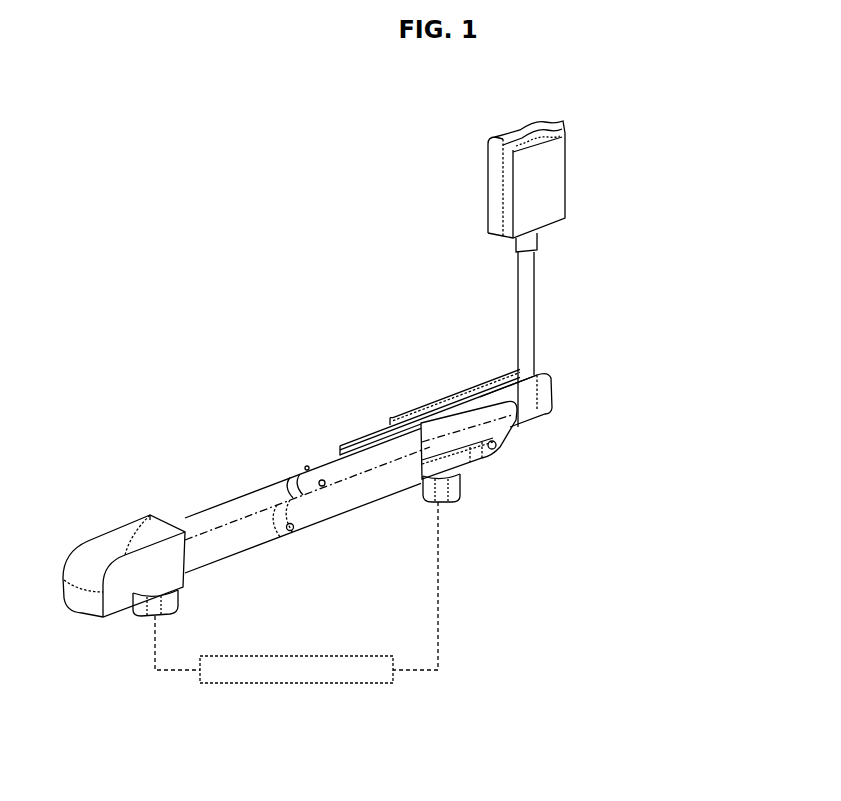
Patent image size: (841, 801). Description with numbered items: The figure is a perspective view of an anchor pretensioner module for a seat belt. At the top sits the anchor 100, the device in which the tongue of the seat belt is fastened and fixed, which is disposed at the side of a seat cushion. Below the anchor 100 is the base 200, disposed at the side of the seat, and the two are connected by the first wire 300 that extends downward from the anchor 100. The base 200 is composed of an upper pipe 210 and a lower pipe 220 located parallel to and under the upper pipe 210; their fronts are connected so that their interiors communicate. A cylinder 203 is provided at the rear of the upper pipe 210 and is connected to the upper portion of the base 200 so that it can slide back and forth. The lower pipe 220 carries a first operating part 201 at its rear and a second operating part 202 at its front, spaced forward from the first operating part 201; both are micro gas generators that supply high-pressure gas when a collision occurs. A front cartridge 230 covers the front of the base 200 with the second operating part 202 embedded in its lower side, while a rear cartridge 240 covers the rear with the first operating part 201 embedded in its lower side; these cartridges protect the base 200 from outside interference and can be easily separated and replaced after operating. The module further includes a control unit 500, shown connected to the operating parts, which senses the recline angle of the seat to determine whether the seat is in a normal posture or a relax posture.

The anchor 100 is at (503, 190).
The base 200 is at (334, 524).
The first operating part 201 is at (462, 494).
The second operating part 202 is at (140, 614).
The cylinder 203 is at (358, 443).
The upper pipe 210 is at (228, 503).
The lower pipe 220 is at (243, 540).
The front cartridge 230 is at (121, 538).
The rear cartridge 240 is at (553, 409).
The first wire 300 is at (523, 310).
The control unit 500 is at (305, 684).